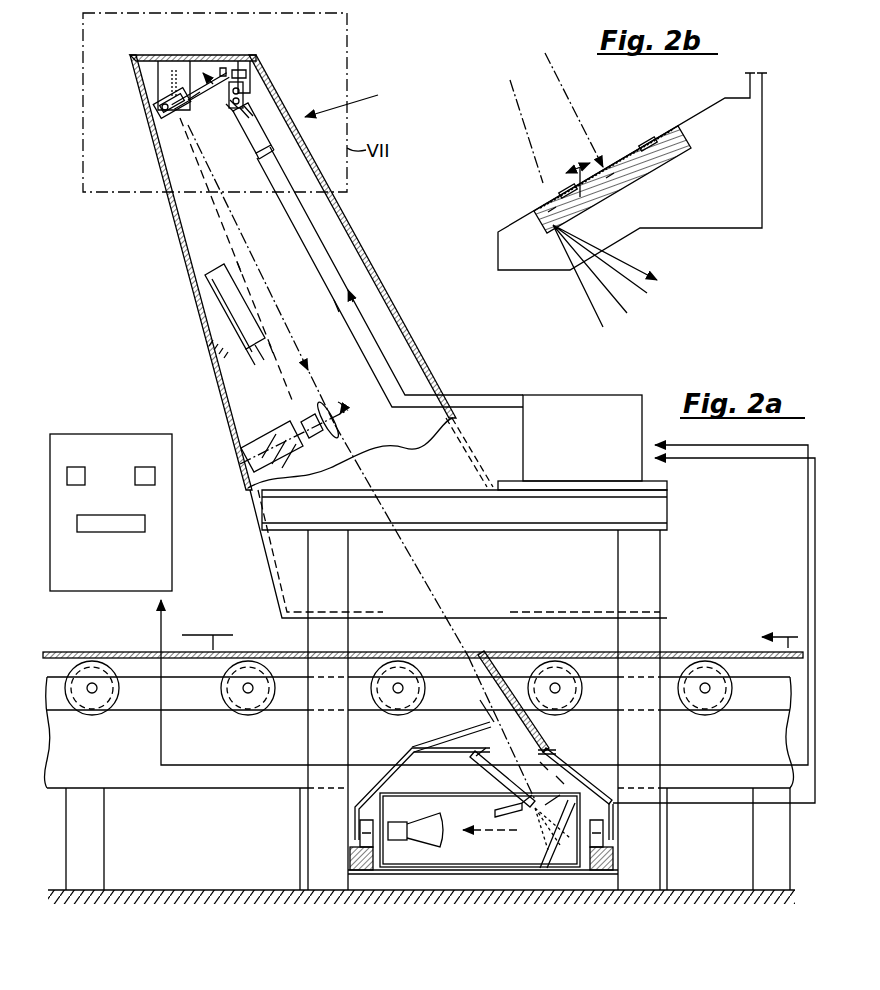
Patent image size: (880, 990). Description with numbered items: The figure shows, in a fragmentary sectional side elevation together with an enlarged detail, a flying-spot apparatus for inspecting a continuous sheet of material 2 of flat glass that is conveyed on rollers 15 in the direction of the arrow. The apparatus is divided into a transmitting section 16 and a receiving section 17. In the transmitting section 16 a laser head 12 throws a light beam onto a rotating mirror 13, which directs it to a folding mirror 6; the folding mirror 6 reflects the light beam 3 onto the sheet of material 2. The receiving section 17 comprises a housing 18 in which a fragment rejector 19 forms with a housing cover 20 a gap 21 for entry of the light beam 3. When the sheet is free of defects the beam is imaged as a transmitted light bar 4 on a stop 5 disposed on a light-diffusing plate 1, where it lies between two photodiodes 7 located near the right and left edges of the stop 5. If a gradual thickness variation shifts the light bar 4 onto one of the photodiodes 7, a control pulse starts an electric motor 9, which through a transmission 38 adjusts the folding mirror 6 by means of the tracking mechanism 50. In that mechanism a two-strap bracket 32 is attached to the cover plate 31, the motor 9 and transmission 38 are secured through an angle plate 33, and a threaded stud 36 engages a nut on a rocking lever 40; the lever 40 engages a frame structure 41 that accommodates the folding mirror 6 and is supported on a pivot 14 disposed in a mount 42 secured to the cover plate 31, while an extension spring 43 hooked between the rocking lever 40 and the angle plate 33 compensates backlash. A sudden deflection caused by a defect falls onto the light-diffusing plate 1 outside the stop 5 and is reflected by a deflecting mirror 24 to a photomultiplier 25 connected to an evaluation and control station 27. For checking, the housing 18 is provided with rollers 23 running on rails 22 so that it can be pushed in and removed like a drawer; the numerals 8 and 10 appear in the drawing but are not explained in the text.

In FIG. 2A, the light-diffusing plate 1 is at (520, 818).
In FIG. 2B, the light-diffusing plate 1 is at (625, 177).
In FIG. 2A, the sheet of material 2 is at (142, 652).
In FIG. 2A, the light beam 3 is at (468, 648).
In FIG. 2A, the transmitted light bar 4 is at (557, 760).
In FIG. 2B, the transmitted light bar 4 is at (610, 173).
In FIG. 2A, the stop 5 is at (517, 777).
In FIG. 2B, the stop 5 is at (628, 155).
In FIG. 2A, the folding mirror 6 is at (170, 127).
In FIG. 2B, the folding mirror 6 is at (546, 105).
In FIG. 2A, the photodiodes 7 is at (517, 800).
In FIG. 2B, the photodiodes 7 is at (568, 187).
In FIG. 2A, the evaluation unit 8 is at (568, 449).
In FIG. 2B, the evaluation unit 8 is at (632, 159).
In FIG. 2A, the electric motor 9 is at (267, 133).
In FIG. 2A, the measuring head sensor 10 is at (482, 779).
In FIG. 2B, the measuring head sensor 10 is at (606, 148).
In FIG. 2A, the laser head 12 is at (228, 297).
In FIG. 2A, the rotating mirror 13 is at (327, 440).
In FIG. 2A, the pivot 14 is at (163, 92).
In FIG. 2A, the rollers 15 is at (92, 660).
In FIG. 2A, the transmitting section 16 is at (372, 316).
In FIG. 2A, the receiving section 17 is at (677, 558).
In FIG. 2A, the housing 18 is at (467, 853).
In FIG. 2A, the fragment rejector 19 is at (512, 657).
In FIG. 2A, the housing cover 20 is at (457, 728).
In FIG. 2A, the gap 21 is at (487, 713).
In FIG. 2A, the rails 22 is at (352, 855).
In FIG. 2A, the rollers 23 is at (358, 828).
In FIG. 2A, the deflecting mirror 24 is at (570, 800).
In FIG. 2A, the photomultiplier 25 is at (428, 840).
In FIG. 2A, the evaluation and control station 27 is at (88, 434).
In FIG. 2A, the cover plate 31 is at (185, 67).
In FIG. 2A, the two-strap bracket 32 is at (246, 75).
In FIG. 2A, the angle plate 33 is at (250, 97).
In FIG. 2A, the threaded stud 36 is at (222, 72).
In FIG. 2A, the transmission 38 is at (257, 113).
In FIG. 2A, the rocking lever 40 is at (203, 100).
In FIG. 2A, the frame structure 41 is at (177, 93).
In FIG. 2A, the mount 42 is at (185, 78).
In FIG. 2A, the extension spring 43 is at (227, 112).
In FIG. 2A, the tracking mechanism 50 is at (352, 98).